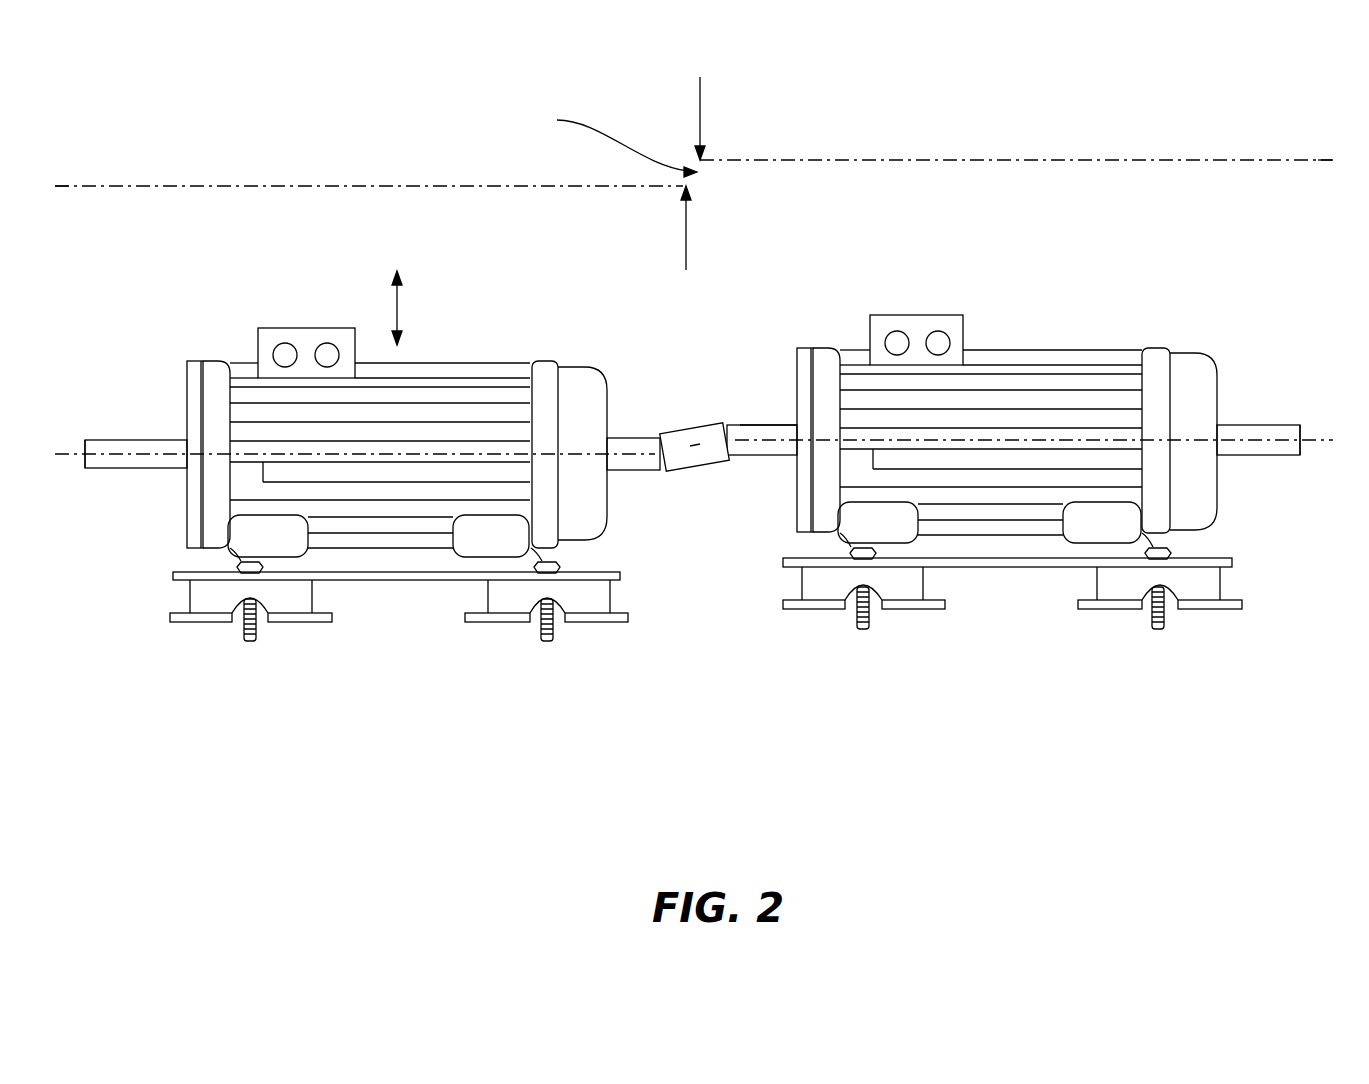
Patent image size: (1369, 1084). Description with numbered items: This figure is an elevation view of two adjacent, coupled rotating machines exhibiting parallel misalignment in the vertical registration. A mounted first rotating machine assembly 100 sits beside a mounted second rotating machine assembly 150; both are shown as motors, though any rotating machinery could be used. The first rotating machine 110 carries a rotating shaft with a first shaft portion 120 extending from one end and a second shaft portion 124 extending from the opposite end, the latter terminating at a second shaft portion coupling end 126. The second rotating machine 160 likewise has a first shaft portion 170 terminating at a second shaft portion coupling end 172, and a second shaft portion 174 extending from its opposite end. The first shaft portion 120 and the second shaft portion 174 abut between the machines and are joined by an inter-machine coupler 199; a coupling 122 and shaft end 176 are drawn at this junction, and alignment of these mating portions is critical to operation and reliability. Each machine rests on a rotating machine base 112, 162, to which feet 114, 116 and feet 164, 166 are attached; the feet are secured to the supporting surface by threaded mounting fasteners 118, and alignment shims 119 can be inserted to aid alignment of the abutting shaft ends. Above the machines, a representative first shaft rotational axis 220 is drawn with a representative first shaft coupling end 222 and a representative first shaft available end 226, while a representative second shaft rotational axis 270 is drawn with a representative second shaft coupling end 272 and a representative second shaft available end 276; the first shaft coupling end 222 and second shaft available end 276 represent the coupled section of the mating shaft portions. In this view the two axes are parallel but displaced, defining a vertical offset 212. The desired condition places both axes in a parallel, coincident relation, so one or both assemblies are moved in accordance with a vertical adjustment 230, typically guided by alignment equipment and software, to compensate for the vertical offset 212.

The mounted first rotating machine assembly 100 is at (147, 314).
The first rotating machine 110 is at (420, 363).
The rotating machine base 112 is at (405, 580).
The foot 114 is at (569, 588).
The foot 116 is at (275, 588).
The threaded mounting fasteners 118 is at (237, 550).
The alignment shims 119 is at (198, 620).
The first shaft portion 120 is at (633, 438).
The coupling 122 is at (670, 447).
The second shaft portion 124 is at (142, 438).
The second shaft portion coupling end 126 is at (83, 447).
The mounted second rotating machine assembly 150 is at (825, 299).
The second rotating machine 160 is at (1027, 350).
The rotating machine base 162 is at (1007, 567).
The foot 164 is at (1192, 575).
The foot 166 is at (898, 575).
The first shaft portion 170 is at (1257, 425).
The second shaft portion coupling end 172 is at (1307, 438).
The second shaft portion 174 is at (775, 423).
The input shaft end 176 is at (726, 427).
The inter-machine coupler 199 is at (700, 440).
The vertical offset 212 is at (603, 141).
The representative first shaft rotational axis 220 is at (310, 186).
The representative first shaft coupling end 222 is at (690, 187).
The representative first shaft available end 226 is at (55, 186).
The vertical adjustment 230 is at (392, 308).
The representative second shaft rotational axis 270 is at (975, 160).
The representative second shaft coupling end 272 is at (1333, 160).
The representative second shaft available end 276 is at (700, 160).